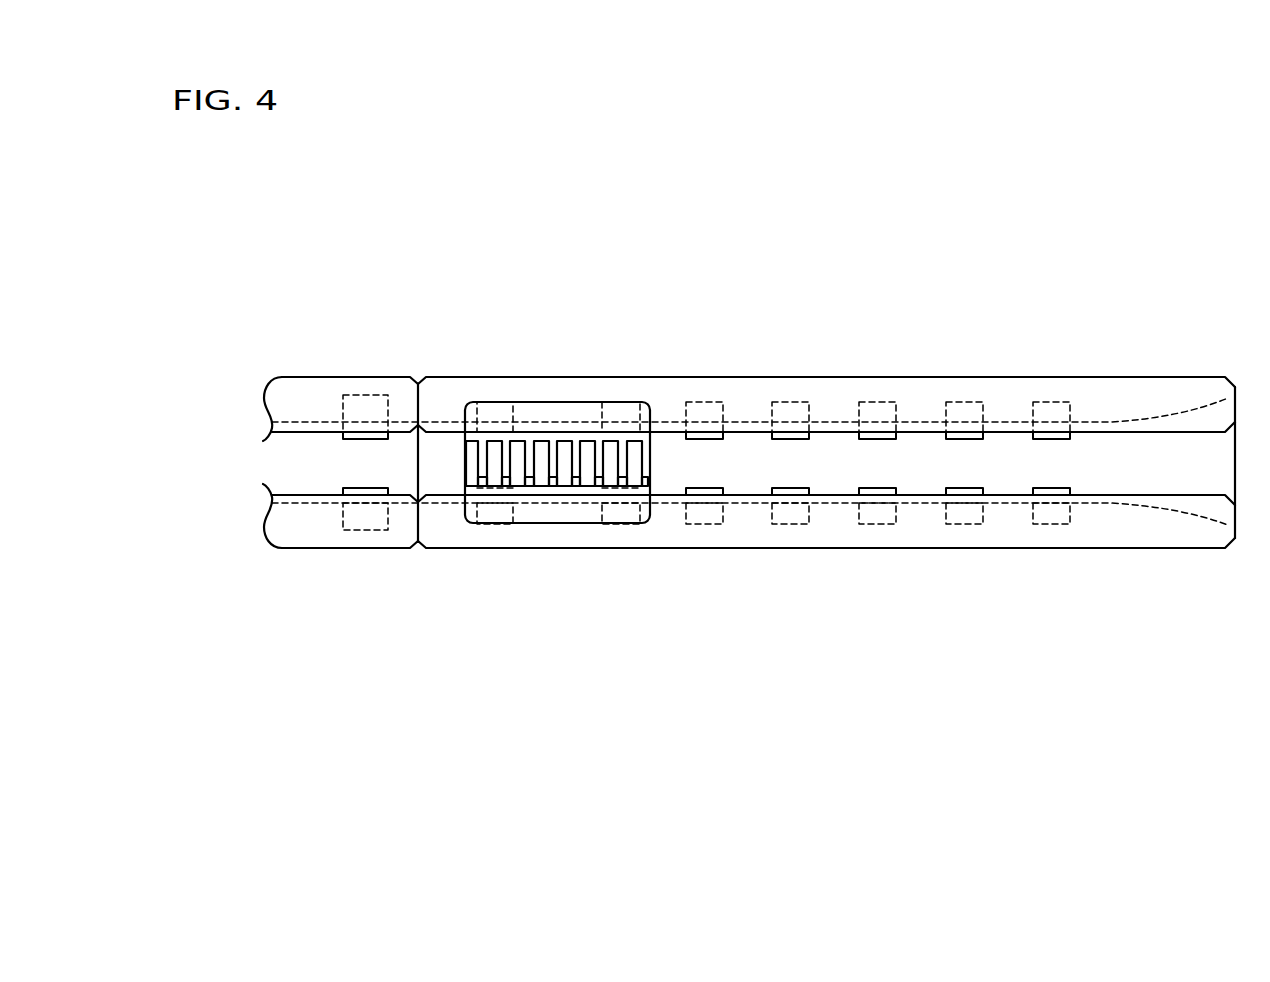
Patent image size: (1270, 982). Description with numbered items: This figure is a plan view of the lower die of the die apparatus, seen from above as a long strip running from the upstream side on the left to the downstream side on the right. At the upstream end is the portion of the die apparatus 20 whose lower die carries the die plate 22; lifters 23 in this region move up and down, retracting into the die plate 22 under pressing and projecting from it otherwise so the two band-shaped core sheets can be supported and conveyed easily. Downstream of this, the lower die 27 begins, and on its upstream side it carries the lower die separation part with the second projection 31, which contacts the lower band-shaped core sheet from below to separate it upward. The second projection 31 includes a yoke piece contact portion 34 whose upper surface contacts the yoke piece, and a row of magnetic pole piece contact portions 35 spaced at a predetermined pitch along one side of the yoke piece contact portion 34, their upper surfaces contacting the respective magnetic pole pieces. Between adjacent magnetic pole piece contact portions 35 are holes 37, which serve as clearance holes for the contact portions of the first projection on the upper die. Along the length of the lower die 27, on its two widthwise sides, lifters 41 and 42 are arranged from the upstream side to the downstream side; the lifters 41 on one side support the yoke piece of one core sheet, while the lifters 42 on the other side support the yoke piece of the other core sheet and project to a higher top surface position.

The die apparatus 20 is at (328, 283).
The die plate 22 is at (378, 377).
The lifters 23 is at (353, 433).
The lower die 27 is at (1117, 392).
The second projection 31 is at (583, 432).
The yoke piece contact portion 34 is at (540, 432).
The magnetic pole piece contact portions 35 is at (578, 474).
The holes 37 is at (635, 453).
The lifters 41 is at (495, 513).
The lifters 42 is at (490, 395).